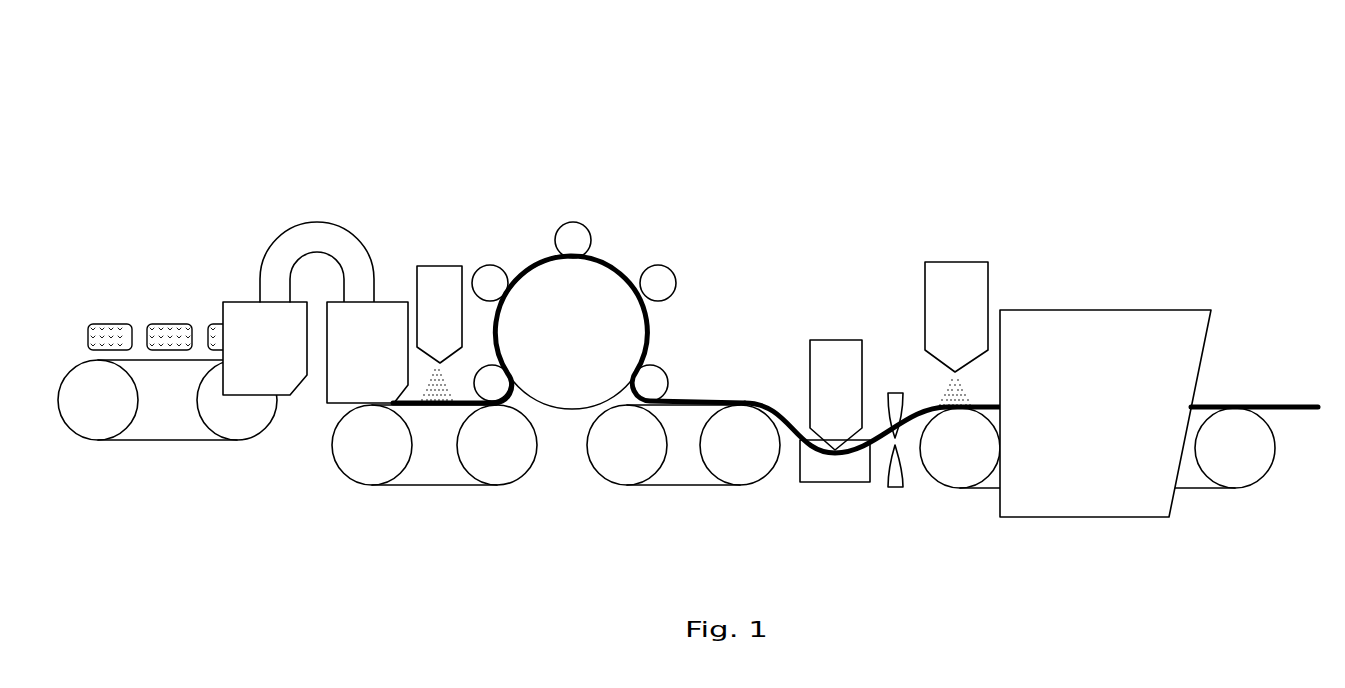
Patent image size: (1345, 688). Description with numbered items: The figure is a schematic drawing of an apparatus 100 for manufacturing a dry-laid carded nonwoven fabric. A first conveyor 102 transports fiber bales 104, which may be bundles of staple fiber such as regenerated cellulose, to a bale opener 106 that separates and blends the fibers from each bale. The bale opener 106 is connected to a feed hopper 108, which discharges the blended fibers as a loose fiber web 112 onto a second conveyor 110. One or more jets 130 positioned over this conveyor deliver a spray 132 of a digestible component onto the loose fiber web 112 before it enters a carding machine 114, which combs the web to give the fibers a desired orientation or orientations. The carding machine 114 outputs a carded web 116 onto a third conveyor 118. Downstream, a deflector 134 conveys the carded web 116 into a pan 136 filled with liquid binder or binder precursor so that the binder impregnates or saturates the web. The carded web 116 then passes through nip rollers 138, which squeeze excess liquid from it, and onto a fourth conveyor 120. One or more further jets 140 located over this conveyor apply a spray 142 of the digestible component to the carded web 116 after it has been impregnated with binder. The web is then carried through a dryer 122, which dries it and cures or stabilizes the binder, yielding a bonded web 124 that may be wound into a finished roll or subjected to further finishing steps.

The apparatus 100 is at (229, 93).
The first conveyor 102 is at (170, 443).
The fiber bales 104 is at (108, 323).
The bale opener 106 is at (245, 308).
The feed hopper 108 is at (328, 397).
The second conveyor 110 is at (457, 485).
The loose fiber web 112 is at (453, 405).
The carding machine 114 is at (593, 292).
The carded web 116 is at (700, 402).
The third conveyor 118 is at (660, 487).
The fourth conveyor 120 is at (987, 488).
The dryer 122 is at (1107, 342).
The bonded web 124 is at (1277, 407).
The jets 130 is at (442, 282).
The spray 132 is at (440, 388).
The deflector 134 is at (833, 370).
The pan 136 is at (838, 483).
The nip rollers 138 is at (903, 462).
The jets 140 is at (953, 283).
The spray 142 is at (958, 387).